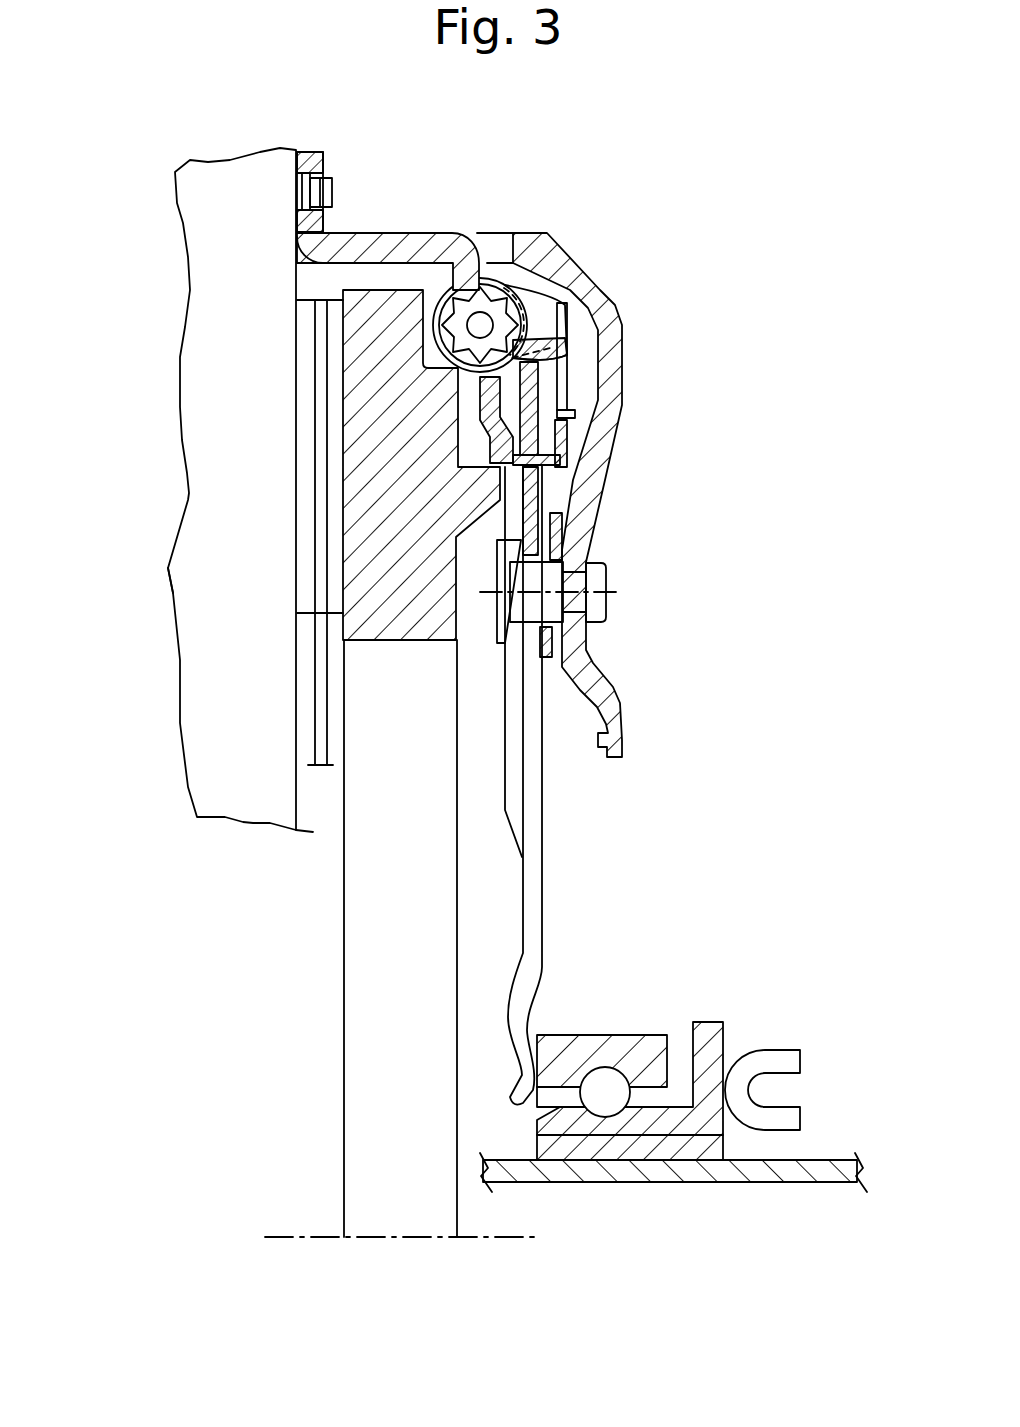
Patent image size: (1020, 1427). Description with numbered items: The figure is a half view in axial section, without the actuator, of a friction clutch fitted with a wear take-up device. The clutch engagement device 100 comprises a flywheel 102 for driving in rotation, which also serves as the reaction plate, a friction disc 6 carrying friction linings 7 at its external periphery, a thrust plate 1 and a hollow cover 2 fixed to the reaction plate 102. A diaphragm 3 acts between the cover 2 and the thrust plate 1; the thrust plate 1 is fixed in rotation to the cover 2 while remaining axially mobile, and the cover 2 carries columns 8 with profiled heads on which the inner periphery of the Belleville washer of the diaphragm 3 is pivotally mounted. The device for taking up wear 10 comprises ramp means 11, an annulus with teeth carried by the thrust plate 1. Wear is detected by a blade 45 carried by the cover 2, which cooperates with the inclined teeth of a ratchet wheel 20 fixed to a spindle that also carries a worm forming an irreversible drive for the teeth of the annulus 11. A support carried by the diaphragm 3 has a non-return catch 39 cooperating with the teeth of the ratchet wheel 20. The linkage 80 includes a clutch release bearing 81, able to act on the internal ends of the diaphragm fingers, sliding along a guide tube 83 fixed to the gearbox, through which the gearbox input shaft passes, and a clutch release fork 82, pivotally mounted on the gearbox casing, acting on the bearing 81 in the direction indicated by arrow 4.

The thrust plate 1 is at (338, 378).
The cover 2 is at (566, 240).
The diaphragm 3 is at (550, 890).
The direction of movement 4 is at (708, 472).
The friction disc 6 is at (306, 718).
The friction linings 7 is at (303, 340).
The columns 8 is at (614, 578).
The device for taking up wear 10 is at (500, 256).
The ramp means 11 is at (483, 437).
The ratchet wheel 20 is at (507, 312).
The non-return catch 39 is at (552, 345).
The blade 45 is at (460, 234).
The linkage 80 is at (673, 1087).
The clutch release bearing 81 is at (614, 1150).
The clutch release fork 82 is at (783, 1130).
The guide tube 83 is at (698, 1150).
The clutch engagement device 100 is at (172, 491).
The flywheel 102 is at (173, 593).